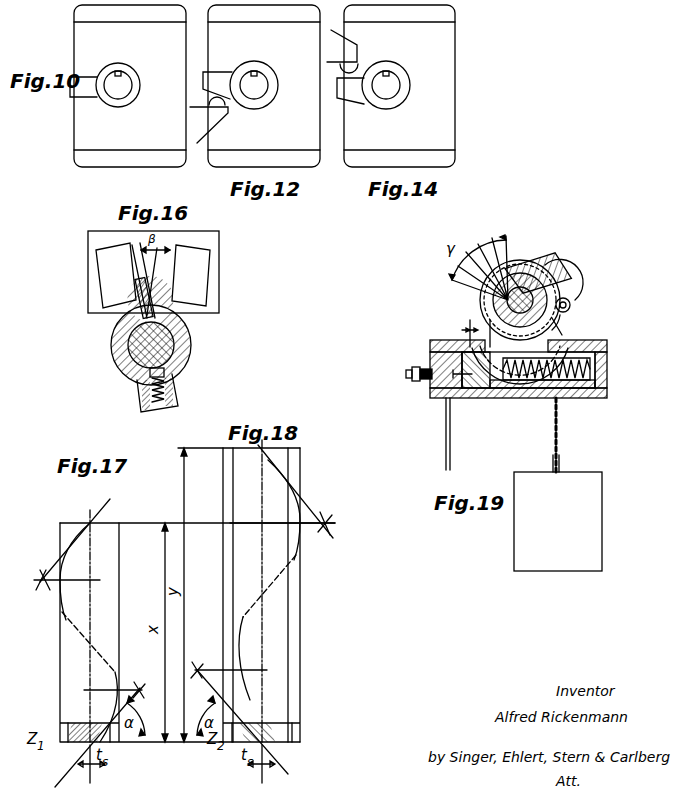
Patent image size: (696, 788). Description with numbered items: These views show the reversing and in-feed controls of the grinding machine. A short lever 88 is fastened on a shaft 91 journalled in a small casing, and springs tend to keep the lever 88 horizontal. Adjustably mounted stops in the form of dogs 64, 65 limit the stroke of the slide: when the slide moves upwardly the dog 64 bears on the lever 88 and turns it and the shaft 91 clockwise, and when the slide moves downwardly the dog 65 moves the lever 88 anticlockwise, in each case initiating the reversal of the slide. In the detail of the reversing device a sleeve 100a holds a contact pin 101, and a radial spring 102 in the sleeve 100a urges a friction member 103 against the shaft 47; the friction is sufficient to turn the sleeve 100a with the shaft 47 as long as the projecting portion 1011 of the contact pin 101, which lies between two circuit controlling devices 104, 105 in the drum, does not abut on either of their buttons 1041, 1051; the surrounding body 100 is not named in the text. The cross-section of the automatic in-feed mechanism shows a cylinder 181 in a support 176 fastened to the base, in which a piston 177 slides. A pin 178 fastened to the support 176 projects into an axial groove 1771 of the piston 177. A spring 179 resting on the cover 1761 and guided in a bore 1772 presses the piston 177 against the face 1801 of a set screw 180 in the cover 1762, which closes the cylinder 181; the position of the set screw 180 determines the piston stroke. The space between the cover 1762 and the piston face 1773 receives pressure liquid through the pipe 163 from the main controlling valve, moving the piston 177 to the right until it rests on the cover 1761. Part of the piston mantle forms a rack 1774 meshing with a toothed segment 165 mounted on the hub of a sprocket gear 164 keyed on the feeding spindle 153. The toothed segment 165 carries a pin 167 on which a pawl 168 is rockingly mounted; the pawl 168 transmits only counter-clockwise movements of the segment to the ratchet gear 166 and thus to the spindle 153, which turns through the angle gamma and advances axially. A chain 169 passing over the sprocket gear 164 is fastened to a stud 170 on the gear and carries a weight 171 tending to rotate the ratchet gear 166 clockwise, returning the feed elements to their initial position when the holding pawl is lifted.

In FIG. 10, the short lever 88 is at (70, 98).
In FIG. 12, the short lever 88 is at (256, 104).
In FIG. 14, the short lever 88 is at (382, 106).
In FIG. 10, the shaft 91 is at (125, 88).
In FIG. 12, the shaft 91 is at (258, 90).
In FIG. 14, the shaft 91 is at (392, 88).
In FIG. 12, the dog (adjustable stop) 64 is at (224, 108).
In FIG. 14, the dog (adjustable stop) 65 is at (361, 70).
In FIG. 16, the housing 100 is at (120, 324).
In FIG. 16, the sleeve 100a is at (192, 342).
In FIG. 16, the contact pin 101 is at (184, 328).
In FIG. 16, the shaft 47 is at (162, 351).
In FIG. 16, the radial spring 102 is at (178, 391).
In FIG. 16, the friction member 103 is at (165, 374).
In FIG. 16, the circuit controlling device 104 is at (191, 275).
In FIG. 16, the button 1041 is at (174, 288).
In FIG. 16, the circuit controlling device 105 is at (116, 275).
In FIG. 16, the button 1051 is at (135, 288).
In FIG. 16, the projecting portion of contact pin 1011 is at (148, 285).
In FIG. 19, the feeding spindle 153 is at (562, 318).
In FIG. 19, the pipe 163 is at (446, 428).
In FIG. 19, the sprocket gear 164 is at (488, 315).
In FIG. 19, the toothed segment 165 is at (548, 340).
In FIG. 19, the ratchet gear 166 is at (535, 262).
In FIG. 19, the pin 167 is at (570, 300).
In FIG. 19, the pawl 168 is at (568, 268).
In FIG. 19, the chain 169 is at (560, 438).
In FIG. 19, the stud 170 is at (486, 296).
In FIG. 19, the weight 171 is at (558, 521).
In FIG. 19, the support 176 is at (512, 398).
In FIG. 19, the piston 177 is at (495, 398).
In FIG. 19, the pin 178 is at (532, 398).
In FIG. 19, the spring 179 is at (570, 398).
In FIG. 19, the set screw 180 is at (420, 376).
In FIG. 19, the cylinder 181 is at (406, 375).
In FIG. 19, the cover 1761 is at (600, 368).
In FIG. 19, the cover 1762 is at (432, 342).
In FIG. 19, the axial groove 1771 is at (532, 398).
In FIG. 19, the bore 1772 is at (598, 398).
In FIG. 19, the piston face 1773 is at (430, 355).
In FIG. 19, the rack 1774 is at (607, 350).
In FIG. 19, the face of set screw 1801 is at (462, 398).